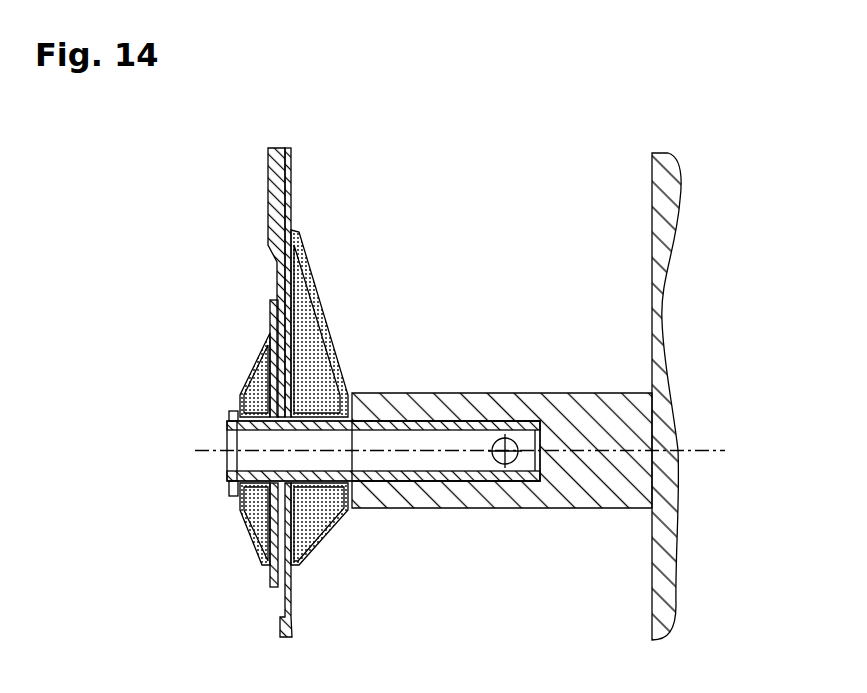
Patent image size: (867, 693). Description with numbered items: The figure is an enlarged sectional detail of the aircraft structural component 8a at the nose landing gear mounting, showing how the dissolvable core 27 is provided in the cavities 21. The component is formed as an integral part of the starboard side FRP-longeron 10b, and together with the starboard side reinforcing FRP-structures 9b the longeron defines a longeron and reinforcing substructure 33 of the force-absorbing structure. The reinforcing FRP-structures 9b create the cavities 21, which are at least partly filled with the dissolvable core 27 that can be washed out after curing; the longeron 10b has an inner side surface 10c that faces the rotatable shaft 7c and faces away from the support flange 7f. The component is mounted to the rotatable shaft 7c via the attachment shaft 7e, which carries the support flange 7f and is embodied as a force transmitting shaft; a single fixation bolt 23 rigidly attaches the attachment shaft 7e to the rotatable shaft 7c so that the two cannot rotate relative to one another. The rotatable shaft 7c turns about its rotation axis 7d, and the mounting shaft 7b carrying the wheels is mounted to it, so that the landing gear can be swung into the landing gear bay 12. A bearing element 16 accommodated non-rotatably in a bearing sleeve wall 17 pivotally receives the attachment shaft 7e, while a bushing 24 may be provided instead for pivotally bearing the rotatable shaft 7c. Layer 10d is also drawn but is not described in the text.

The landing gear bay 12 is at (527, 208).
The mounting shaft 7b is at (658, 238).
The rotatable shaft 7c is at (592, 497).
The rotation axis 7d is at (718, 438).
The attachment shaft 7e is at (486, 420).
The support flange 7f is at (230, 421).
The fixation bolt 23 is at (510, 441).
The bushing 24 is at (232, 492).
The longeron and reinforcing substructure 33 is at (408, 303).
The starboard side FRP-longeron 10b is at (264, 193).
The inner side surface 10c is at (292, 160).
The plate section 10d is at (275, 268).
The aircraft structural component 8a is at (336, 323).
The starboard side reinforcing FRP-structure 9b is at (326, 298).
The bearing element 16 is at (245, 525).
The bearing sleeve wall 17 is at (346, 512).
The cavities 21 is at (300, 290).
The dissolvable core 27 is at (243, 393).